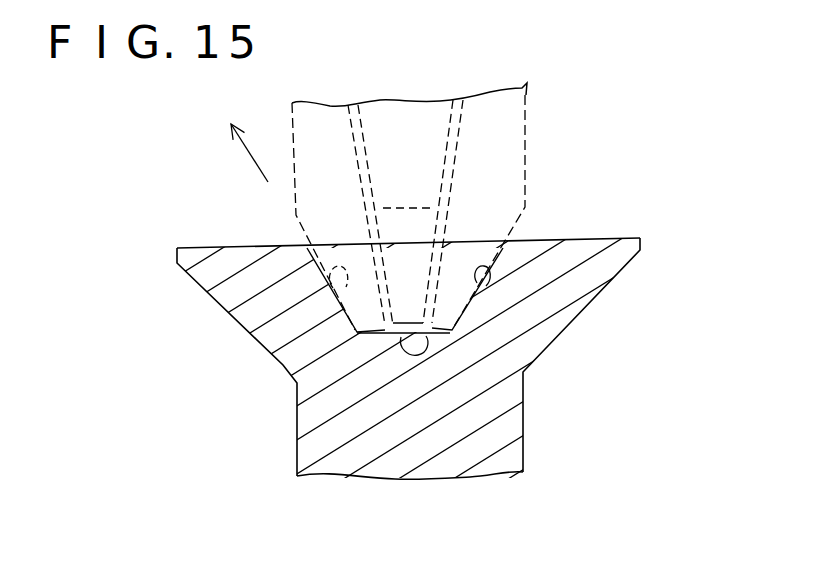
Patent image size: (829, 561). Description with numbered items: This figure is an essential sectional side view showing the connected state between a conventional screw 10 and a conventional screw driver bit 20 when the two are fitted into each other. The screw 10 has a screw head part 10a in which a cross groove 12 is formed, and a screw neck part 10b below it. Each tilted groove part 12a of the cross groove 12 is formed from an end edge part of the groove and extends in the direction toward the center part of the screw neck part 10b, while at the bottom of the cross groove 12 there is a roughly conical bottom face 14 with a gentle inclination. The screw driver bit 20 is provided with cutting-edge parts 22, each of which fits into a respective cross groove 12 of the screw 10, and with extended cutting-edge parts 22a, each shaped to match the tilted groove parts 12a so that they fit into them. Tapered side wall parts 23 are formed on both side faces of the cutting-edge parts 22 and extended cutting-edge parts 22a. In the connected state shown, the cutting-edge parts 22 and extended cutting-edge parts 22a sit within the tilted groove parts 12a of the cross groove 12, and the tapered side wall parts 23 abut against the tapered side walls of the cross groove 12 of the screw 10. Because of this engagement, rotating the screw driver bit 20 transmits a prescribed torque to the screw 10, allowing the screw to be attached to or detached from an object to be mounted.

The screw 10 is at (290, 447).
The screw head part 10a is at (617, 253).
The screw neck part 10b is at (483, 389).
The cross groove 12 is at (342, 257).
The tilted groove part 12a is at (478, 288).
The conical bottom face 14 is at (357, 333).
The screw driver bit 20 is at (527, 93).
The cutting-edge part 22 is at (527, 152).
The extended cutting-edge part 22a is at (338, 291).
The tapered side wall part 23 is at (493, 215).